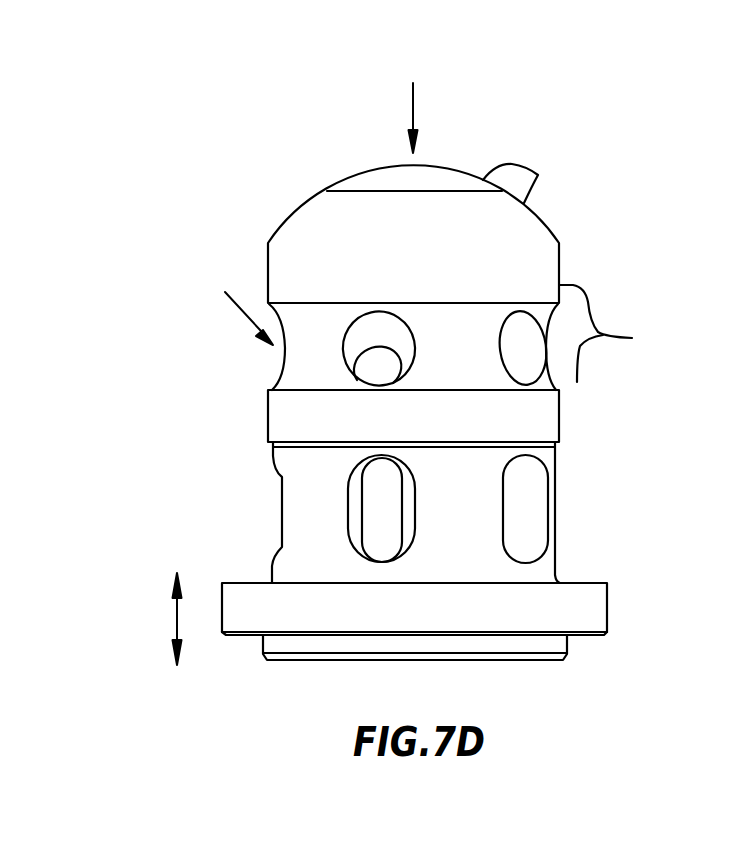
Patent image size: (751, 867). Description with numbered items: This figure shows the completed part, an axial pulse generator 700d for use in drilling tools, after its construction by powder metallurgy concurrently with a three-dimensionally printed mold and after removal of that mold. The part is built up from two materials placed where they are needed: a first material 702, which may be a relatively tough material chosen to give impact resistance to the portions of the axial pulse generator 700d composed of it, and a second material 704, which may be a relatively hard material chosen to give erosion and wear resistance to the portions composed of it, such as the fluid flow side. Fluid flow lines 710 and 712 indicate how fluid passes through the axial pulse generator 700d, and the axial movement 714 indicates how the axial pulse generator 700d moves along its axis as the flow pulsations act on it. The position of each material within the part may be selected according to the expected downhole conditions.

The axial pulse generator 700d is at (256, 124).
The first material 702 is at (607, 608).
The second material 704 is at (538, 175).
The fluid flow line 710 is at (407, 112).
The fluid flow line 712 is at (247, 318).
The axial movement 714 is at (177, 617).